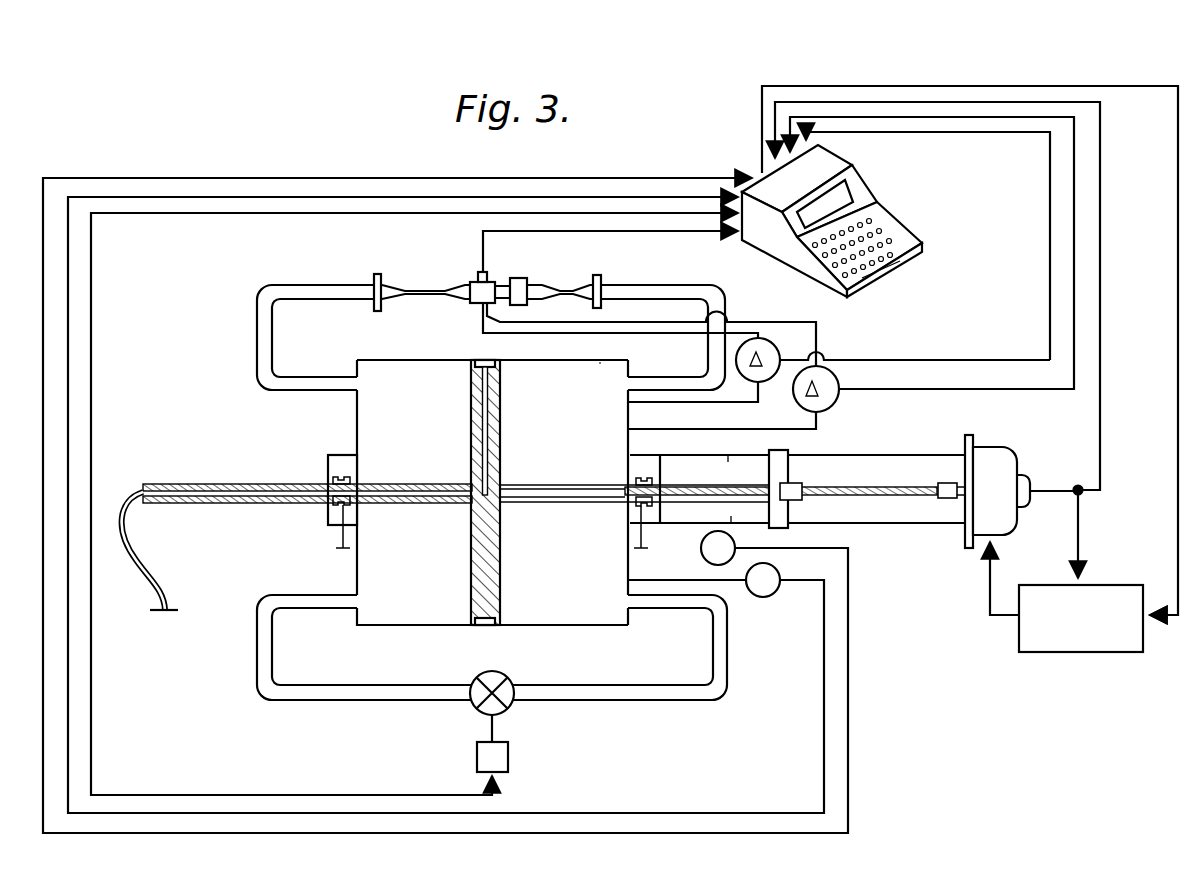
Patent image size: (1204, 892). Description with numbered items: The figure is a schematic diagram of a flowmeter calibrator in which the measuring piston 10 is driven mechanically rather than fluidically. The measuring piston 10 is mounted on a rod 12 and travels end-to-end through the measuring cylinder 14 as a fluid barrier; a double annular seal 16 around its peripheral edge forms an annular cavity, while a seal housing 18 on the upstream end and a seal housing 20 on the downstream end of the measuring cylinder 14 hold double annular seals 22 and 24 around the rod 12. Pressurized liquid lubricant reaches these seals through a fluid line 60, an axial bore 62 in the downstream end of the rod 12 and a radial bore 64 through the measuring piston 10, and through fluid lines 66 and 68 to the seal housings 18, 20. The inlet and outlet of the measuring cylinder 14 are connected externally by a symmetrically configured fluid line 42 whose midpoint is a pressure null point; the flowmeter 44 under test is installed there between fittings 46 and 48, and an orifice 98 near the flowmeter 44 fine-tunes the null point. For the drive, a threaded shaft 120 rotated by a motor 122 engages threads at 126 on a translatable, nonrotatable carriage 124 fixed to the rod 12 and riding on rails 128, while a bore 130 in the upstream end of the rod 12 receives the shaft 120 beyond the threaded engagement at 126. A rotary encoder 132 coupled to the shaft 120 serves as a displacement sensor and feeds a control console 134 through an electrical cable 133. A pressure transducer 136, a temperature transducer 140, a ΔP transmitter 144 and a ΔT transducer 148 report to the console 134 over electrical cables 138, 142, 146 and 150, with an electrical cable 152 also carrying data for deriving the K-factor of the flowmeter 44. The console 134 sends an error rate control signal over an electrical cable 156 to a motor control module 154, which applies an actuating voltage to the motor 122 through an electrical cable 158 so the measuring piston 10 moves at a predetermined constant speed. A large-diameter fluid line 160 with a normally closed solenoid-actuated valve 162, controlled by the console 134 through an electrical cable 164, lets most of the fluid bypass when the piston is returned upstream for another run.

The measuring piston 10 is at (515, 425).
The rod 12 is at (560, 484).
The measuring cylinder 14 is at (600, 362).
The double annular seal 16 is at (478, 354).
The seal housing 18 is at (645, 456).
The seal housing 20 is at (340, 455).
The double annular seal 22 is at (648, 519).
The double annular seal 24 is at (328, 510).
The fluid line 42 is at (692, 283).
The flowmeter 44 is at (486, 272).
The fitting 46 is at (379, 274).
The fitting 48 is at (598, 275).
The fluid line 60 is at (150, 580).
The axial bore 62 is at (233, 493).
The radial bore 64 is at (481, 412).
The fluid line 66 is at (645, 549).
The fluid line 68 is at (340, 537).
The orifice 98 is at (522, 278).
The threaded shaft 120 is at (832, 488).
The motor 122 is at (1005, 447).
The carriage 124 is at (782, 473).
The threads 126 is at (800, 503).
The rails 128 is at (731, 456).
The bore 130 is at (585, 498).
The rotary encoder 132 is at (1020, 478).
The electrical cable 133 is at (1083, 492).
The control console 134 is at (875, 186).
The pressure transducer 136 is at (736, 547).
The electrical cable 138 is at (848, 633).
The temperature transducer 140 is at (763, 598).
The electrical cable 142 is at (824, 735).
The ΔP transmitter 144 is at (767, 381).
The electrical cable 146 is at (983, 357).
The ΔT transducer 148 is at (840, 384).
The electrical cable 150 is at (995, 392).
The electrical cable 152 is at (648, 232).
The motor control module 154 is at (1065, 652).
The electrical cable 156 is at (1178, 543).
The electrical cable 158 is at (1002, 615).
The fluid line 160 is at (592, 684).
The solenoid-actuated valve 162 is at (512, 702).
The electrical cable 164 is at (298, 792).